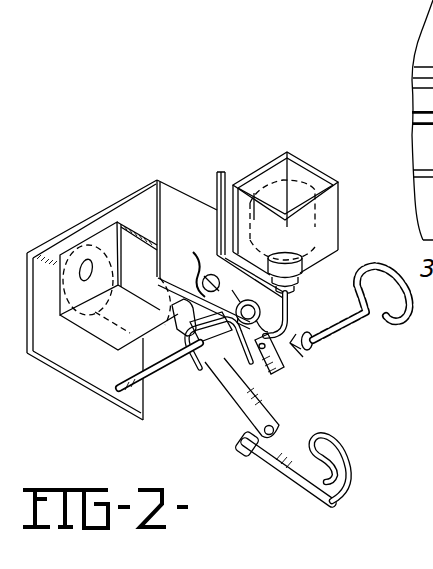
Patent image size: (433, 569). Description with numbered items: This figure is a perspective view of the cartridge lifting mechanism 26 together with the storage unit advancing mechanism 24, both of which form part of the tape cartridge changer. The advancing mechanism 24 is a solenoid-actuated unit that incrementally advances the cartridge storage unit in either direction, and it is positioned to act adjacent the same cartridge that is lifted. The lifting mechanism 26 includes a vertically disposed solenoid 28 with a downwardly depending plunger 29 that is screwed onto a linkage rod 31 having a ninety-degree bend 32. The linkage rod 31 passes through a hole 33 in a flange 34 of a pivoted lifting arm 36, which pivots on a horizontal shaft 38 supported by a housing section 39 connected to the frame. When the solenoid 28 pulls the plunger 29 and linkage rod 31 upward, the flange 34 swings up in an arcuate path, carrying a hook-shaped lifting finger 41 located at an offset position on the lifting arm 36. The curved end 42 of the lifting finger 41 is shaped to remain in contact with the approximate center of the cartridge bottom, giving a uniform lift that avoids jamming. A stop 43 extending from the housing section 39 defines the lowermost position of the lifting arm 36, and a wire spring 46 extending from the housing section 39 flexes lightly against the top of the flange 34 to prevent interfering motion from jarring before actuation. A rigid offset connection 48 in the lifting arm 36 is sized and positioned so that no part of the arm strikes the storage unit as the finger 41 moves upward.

The storage unit advancing mechanism 24 is at (87, 243).
The cartridge lifting mechanism 26 is at (300, 150).
The solenoid 28 is at (263, 188).
The plunger 29 is at (303, 263).
The linkage rod 31 is at (285, 306).
The 90° bend 32 is at (315, 347).
The hole 33 is at (288, 356).
The flange 34 is at (263, 383).
The lifting arm 36 is at (232, 413).
The horizontal shaft 38 is at (133, 373).
The housing section 39 is at (165, 183).
The lifting finger 41 is at (295, 483).
The curved end 42 is at (320, 435).
The stop 43 is at (217, 383).
The wire spring 46 is at (191, 262).
The offset connection 48 is at (242, 455).